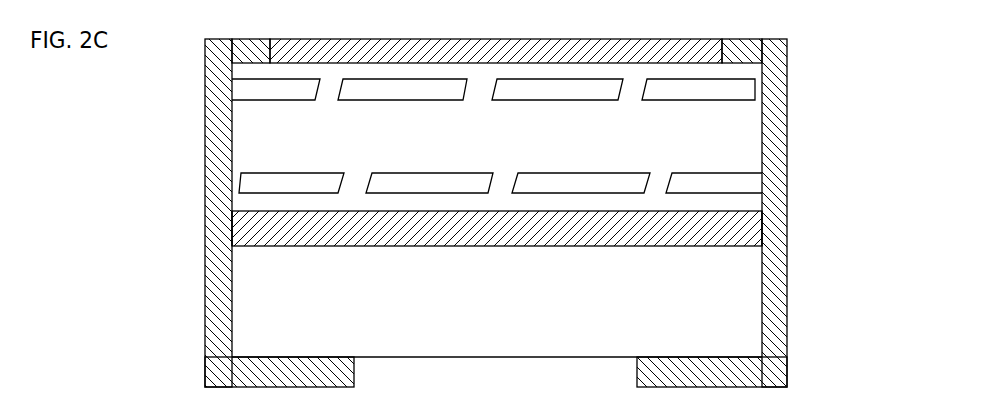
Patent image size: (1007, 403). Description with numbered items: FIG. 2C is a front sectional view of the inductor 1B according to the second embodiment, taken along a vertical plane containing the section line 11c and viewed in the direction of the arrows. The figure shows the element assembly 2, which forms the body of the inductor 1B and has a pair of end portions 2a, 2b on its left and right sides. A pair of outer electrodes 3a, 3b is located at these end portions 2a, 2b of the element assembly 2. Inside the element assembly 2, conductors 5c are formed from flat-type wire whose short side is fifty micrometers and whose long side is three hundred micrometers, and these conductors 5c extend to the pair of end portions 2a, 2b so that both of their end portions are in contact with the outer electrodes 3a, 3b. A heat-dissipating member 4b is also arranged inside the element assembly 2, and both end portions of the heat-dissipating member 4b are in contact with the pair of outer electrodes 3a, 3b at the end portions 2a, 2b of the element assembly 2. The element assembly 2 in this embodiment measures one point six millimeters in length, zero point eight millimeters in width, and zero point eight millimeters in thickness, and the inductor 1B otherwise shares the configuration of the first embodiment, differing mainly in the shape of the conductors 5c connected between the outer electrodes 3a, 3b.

The inductor 1B is at (491, 193).
The element assembly 2 is at (499, 213).
The end portion 2a is at (207, 167).
The end portion 2b is at (772, 142).
The outer electrode 3a is at (207, 219).
The outer electrode 3b is at (787, 226).
The heat-dissipating member 4b is at (283, 243).
The conductor 5c is at (278, 97).
The lid portion 11c is at (496, 31).